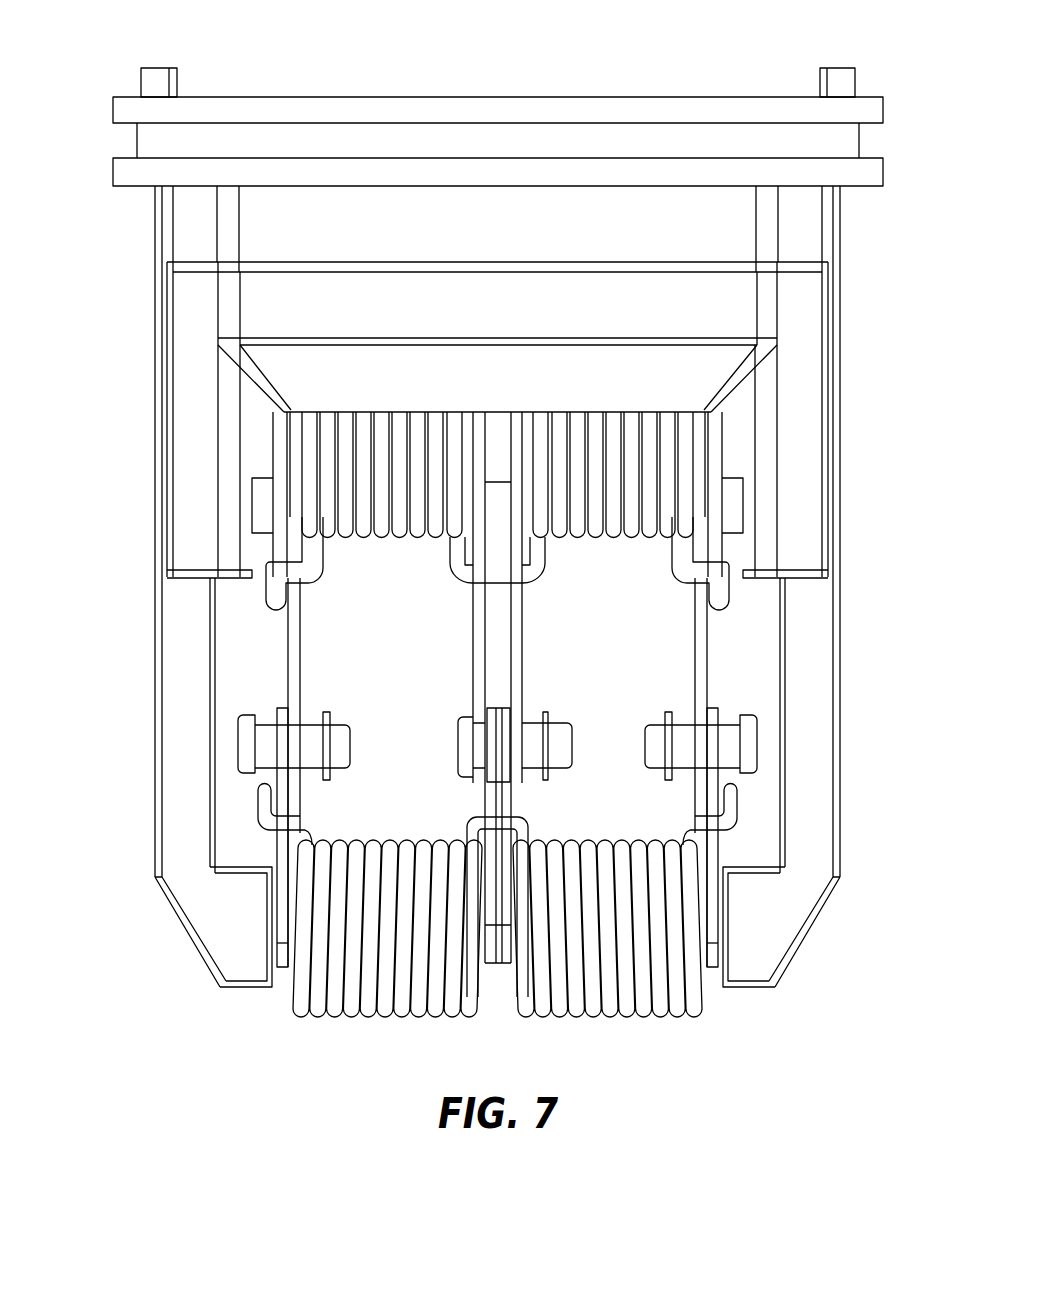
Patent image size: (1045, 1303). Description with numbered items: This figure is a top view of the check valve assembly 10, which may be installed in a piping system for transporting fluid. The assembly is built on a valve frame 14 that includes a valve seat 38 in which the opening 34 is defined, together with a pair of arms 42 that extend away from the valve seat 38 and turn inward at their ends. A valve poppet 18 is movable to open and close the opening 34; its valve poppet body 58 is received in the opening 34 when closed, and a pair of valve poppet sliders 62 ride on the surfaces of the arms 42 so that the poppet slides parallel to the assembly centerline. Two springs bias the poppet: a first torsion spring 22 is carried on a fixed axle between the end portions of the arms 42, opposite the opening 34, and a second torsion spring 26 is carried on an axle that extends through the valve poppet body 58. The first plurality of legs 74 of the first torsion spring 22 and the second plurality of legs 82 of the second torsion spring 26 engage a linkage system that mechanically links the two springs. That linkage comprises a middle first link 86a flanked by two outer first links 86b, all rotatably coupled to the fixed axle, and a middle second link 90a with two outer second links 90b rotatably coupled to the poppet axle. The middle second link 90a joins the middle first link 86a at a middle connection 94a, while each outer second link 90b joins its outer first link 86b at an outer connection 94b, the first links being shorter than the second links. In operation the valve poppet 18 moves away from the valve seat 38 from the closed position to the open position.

The check valve assembly 10 is at (77, 88).
The valve frame 14 is at (740, 123).
The valve poppet 18 is at (322, 318).
The first torsion spring 22 is at (350, 1008).
The second torsion spring 26 is at (608, 446).
The opening 34 is at (652, 70).
The valve seat 38 is at (312, 145).
The arms 42 is at (160, 718).
The valve poppet body 58 is at (708, 317).
The valve poppet sliders 62 is at (195, 430).
The first plurality of legs 74 is at (258, 798).
The second plurality of legs 82 is at (273, 597).
The middle first link 86a is at (500, 888).
The outer first links 86b is at (273, 848).
The middle second link 90a is at (515, 533).
The outer second links 90b is at (300, 630).
The middle connection 94a is at (533, 742).
The outer connections 94b is at (257, 740).